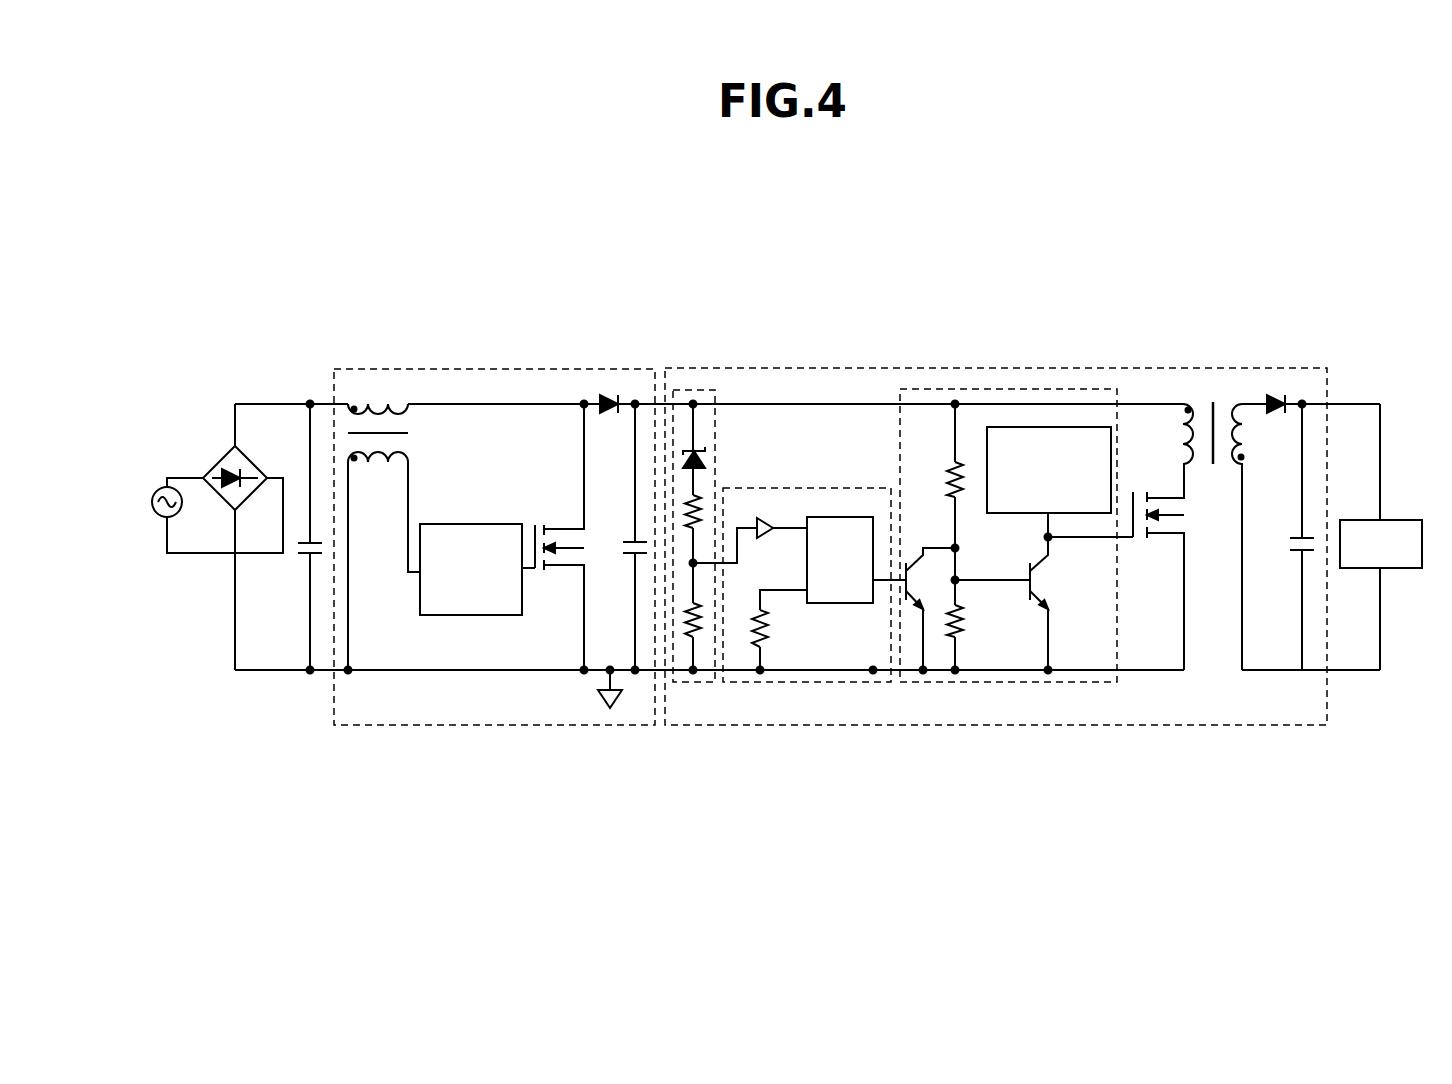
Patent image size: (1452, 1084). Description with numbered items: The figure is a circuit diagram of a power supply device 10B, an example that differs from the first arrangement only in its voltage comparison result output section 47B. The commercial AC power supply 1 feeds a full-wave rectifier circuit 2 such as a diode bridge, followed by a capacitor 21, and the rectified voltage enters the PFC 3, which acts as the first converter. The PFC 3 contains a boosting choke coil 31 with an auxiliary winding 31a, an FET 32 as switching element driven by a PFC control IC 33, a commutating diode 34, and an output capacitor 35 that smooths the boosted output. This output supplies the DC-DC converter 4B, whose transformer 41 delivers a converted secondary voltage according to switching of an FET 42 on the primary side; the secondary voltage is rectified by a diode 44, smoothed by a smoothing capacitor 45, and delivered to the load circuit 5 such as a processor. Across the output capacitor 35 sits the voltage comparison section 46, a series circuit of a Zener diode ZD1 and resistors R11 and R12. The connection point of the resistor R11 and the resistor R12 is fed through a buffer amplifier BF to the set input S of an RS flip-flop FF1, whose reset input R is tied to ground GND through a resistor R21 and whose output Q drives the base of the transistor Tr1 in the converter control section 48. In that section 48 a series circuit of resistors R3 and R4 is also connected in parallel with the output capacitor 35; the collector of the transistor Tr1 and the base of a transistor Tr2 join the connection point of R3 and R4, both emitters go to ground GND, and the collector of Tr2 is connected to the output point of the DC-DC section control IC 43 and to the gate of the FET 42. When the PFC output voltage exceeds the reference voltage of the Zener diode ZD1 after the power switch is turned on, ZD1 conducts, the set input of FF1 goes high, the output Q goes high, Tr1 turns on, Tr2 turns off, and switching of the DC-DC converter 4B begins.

The AC power supply 1 is at (158, 487).
The full-wave rectifier circuit 2 is at (255, 466).
The capacitor 21 is at (304, 560).
The PFC 3 is at (480, 728).
The boosting choke coil 31 is at (409, 410).
The auxiliary winding 31a is at (409, 450).
The FET 32 is at (538, 525).
The PFC control IC 33 is at (498, 524).
The commutating diode 34 is at (612, 394).
The output capacitor 35 is at (624, 546).
The DC-DC converter 4B is at (1310, 727).
The transformer 41 is at (1220, 397).
The FET 42 is at (1138, 542).
The DC-DC section control IC 43 is at (1025, 427).
The diode 44 is at (1276, 393).
The smoothing capacitor 45 is at (1290, 548).
The voltage comparison section 46 is at (693, 390).
The voltage comparison result output section 47B is at (810, 488).
The converter control section 48 is at (1100, 389).
The load circuit 5 is at (1408, 520).
The power supply device 10B is at (805, 289).
The Zener diode ZD1 is at (704, 456).
The resistor R11 is at (703, 500).
The resistor R12 is at (699, 632).
The resistor R21 is at (783, 632).
The resistor R3 is at (934, 492).
The resistor R4 is at (974, 627).
The buffer amplifier BF is at (750, 545).
The RS flip-flop FF1 is at (862, 605).
The transistor Tr1 is at (930, 596).
The transistor Tr2 is at (1003, 605).
The ground GND is at (583, 695).